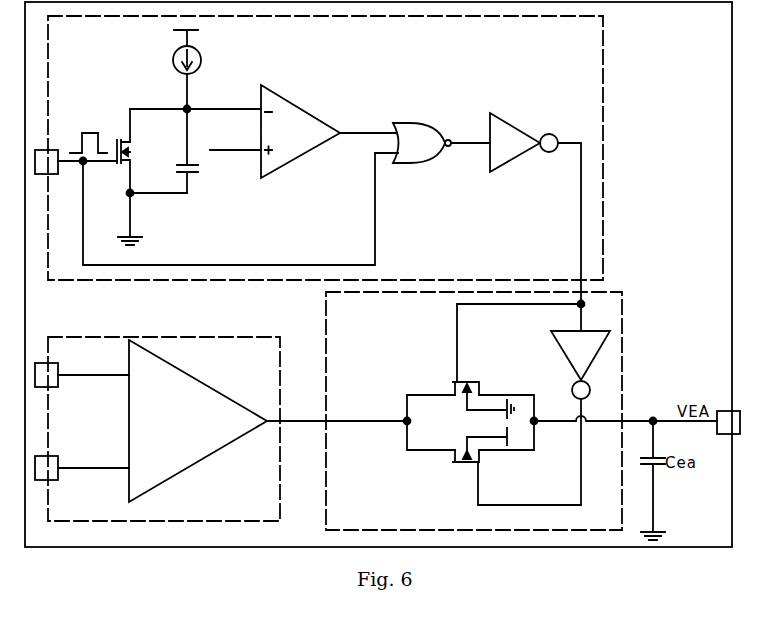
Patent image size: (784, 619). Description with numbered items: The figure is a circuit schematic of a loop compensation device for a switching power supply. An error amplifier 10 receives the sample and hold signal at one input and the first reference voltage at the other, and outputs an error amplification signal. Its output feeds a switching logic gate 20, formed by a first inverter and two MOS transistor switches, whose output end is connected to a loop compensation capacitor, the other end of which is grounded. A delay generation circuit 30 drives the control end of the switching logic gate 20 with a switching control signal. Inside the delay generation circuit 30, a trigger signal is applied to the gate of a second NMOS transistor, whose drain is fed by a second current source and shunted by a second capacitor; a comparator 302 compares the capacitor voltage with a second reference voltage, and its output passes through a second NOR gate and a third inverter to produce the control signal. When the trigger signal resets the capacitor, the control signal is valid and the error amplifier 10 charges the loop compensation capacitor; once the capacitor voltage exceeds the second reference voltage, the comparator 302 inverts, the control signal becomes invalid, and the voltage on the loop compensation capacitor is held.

The error amplifier 10 is at (147, 337).
The switching logic gate 20 is at (622, 356).
The delay generation circuit 30 is at (603, 106).
The comparator 302 is at (292, 100).